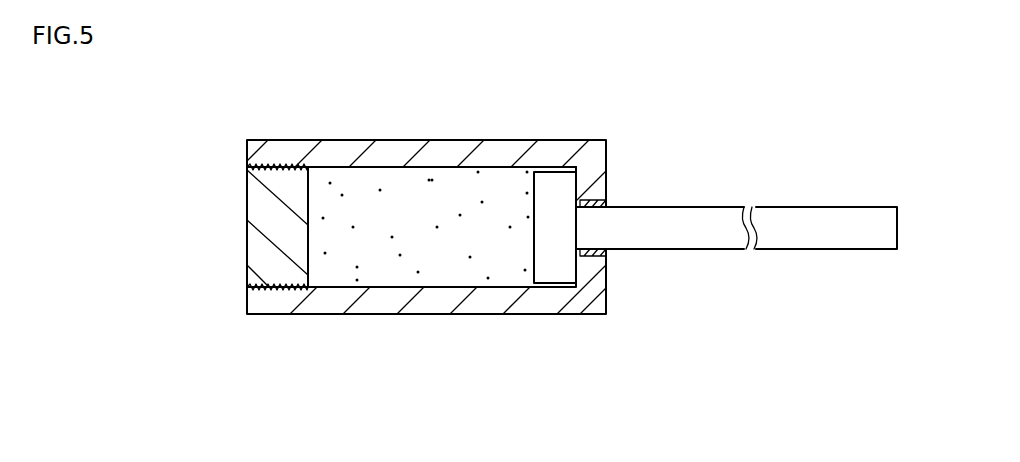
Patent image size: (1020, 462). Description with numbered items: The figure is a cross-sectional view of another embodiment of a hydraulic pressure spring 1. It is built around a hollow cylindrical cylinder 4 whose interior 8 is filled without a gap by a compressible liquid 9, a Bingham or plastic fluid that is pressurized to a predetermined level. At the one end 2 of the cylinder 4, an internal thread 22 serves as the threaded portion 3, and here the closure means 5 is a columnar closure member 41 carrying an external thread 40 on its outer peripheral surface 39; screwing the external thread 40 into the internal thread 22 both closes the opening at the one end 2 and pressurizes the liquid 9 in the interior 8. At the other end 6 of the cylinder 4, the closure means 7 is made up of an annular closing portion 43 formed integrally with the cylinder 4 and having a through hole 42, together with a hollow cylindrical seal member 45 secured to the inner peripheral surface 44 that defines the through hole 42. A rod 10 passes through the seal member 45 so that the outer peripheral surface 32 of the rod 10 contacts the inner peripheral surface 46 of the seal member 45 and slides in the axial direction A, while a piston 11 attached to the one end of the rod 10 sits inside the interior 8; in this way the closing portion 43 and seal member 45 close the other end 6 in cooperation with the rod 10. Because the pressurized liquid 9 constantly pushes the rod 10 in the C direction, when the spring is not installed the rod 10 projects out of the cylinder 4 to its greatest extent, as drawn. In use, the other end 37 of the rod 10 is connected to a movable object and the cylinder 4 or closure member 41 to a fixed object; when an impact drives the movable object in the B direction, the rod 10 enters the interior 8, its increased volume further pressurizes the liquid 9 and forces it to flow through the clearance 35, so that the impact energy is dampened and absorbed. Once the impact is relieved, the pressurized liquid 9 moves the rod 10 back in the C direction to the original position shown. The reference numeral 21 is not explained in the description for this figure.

The hydraulic pressure spring 1 is at (387, 316).
The one end of the cylinder 2 is at (262, 294).
The threaded portion 3 is at (268, 150).
The cylinder 4 is at (410, 148).
The closure means 5 is at (246, 213).
The other end of the cylinder 6 is at (590, 152).
The closure means 7 is at (607, 177).
The interior of the cylinder 8 is at (437, 265).
The compressible liquid 9 is at (468, 258).
The rod 10 is at (800, 220).
The piston 11 is at (548, 180).
The internal thread 21 is at (352, 168).
The internal thread 22 is at (300, 283).
The outer peripheral surface of the rod 32 is at (738, 252).
The clearance 35 is at (540, 288).
The other end of the rod 37 is at (880, 237).
The outer peripheral surface of the closure member 39 is at (280, 166).
The external thread 40 is at (270, 290).
The columnar closure member 41 is at (258, 250).
The through hole 42 is at (604, 249).
The annular closing portion 43 is at (597, 295).
The inner peripheral surface of the closing portion 44 is at (612, 207).
The hollow cylindrical seal member 45 is at (576, 290).
The inner peripheral surface of the seal member 46 is at (612, 252).
The axial direction A is at (855, 264).
The B direction B is at (725, 264).
The C direction C is at (752, 190).